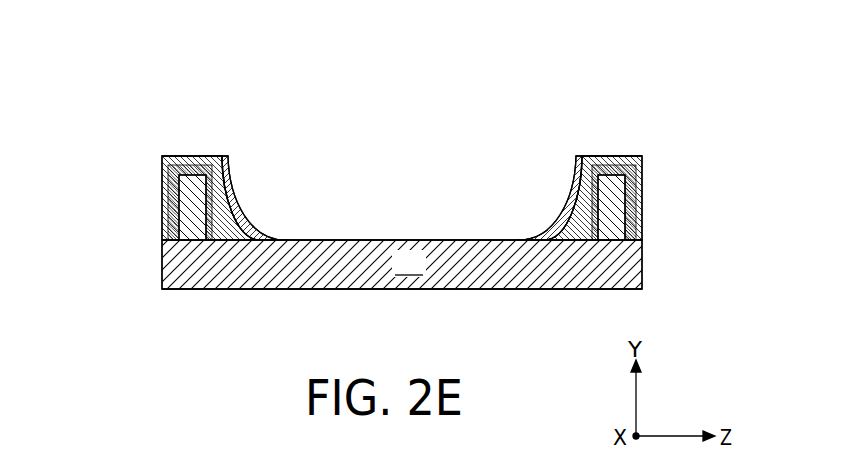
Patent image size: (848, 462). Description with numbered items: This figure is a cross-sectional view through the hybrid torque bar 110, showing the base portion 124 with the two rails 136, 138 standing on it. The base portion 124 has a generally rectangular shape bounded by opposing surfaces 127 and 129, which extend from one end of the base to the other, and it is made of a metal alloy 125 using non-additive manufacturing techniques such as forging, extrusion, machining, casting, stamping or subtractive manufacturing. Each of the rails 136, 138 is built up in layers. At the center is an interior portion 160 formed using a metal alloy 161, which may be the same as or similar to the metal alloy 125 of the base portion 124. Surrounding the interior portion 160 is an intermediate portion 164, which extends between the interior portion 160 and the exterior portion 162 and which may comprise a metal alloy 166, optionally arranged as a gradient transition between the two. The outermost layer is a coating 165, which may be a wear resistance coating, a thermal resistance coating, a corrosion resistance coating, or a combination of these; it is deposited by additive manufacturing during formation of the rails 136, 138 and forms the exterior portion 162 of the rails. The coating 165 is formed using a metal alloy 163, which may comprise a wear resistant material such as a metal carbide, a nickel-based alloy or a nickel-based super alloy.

The torque bar 110 is at (125, 69).
The base portion 124 is at (635, 265).
The metal alloy 125 is at (409, 262).
The opposing surface 127 is at (375, 240).
The opposing surface 129 is at (300, 290).
The rail 136 is at (197, 137).
The rail 138 is at (609, 132).
The interior portion 160 is at (153, 230).
The metal alloy 161 is at (200, 222).
The exterior portion 162 is at (157, 151).
The metal alloy 163 is at (224, 156).
The intermediate portion 164 is at (152, 187).
The coating 165 is at (240, 192).
The metal alloy 166 is at (550, 229).